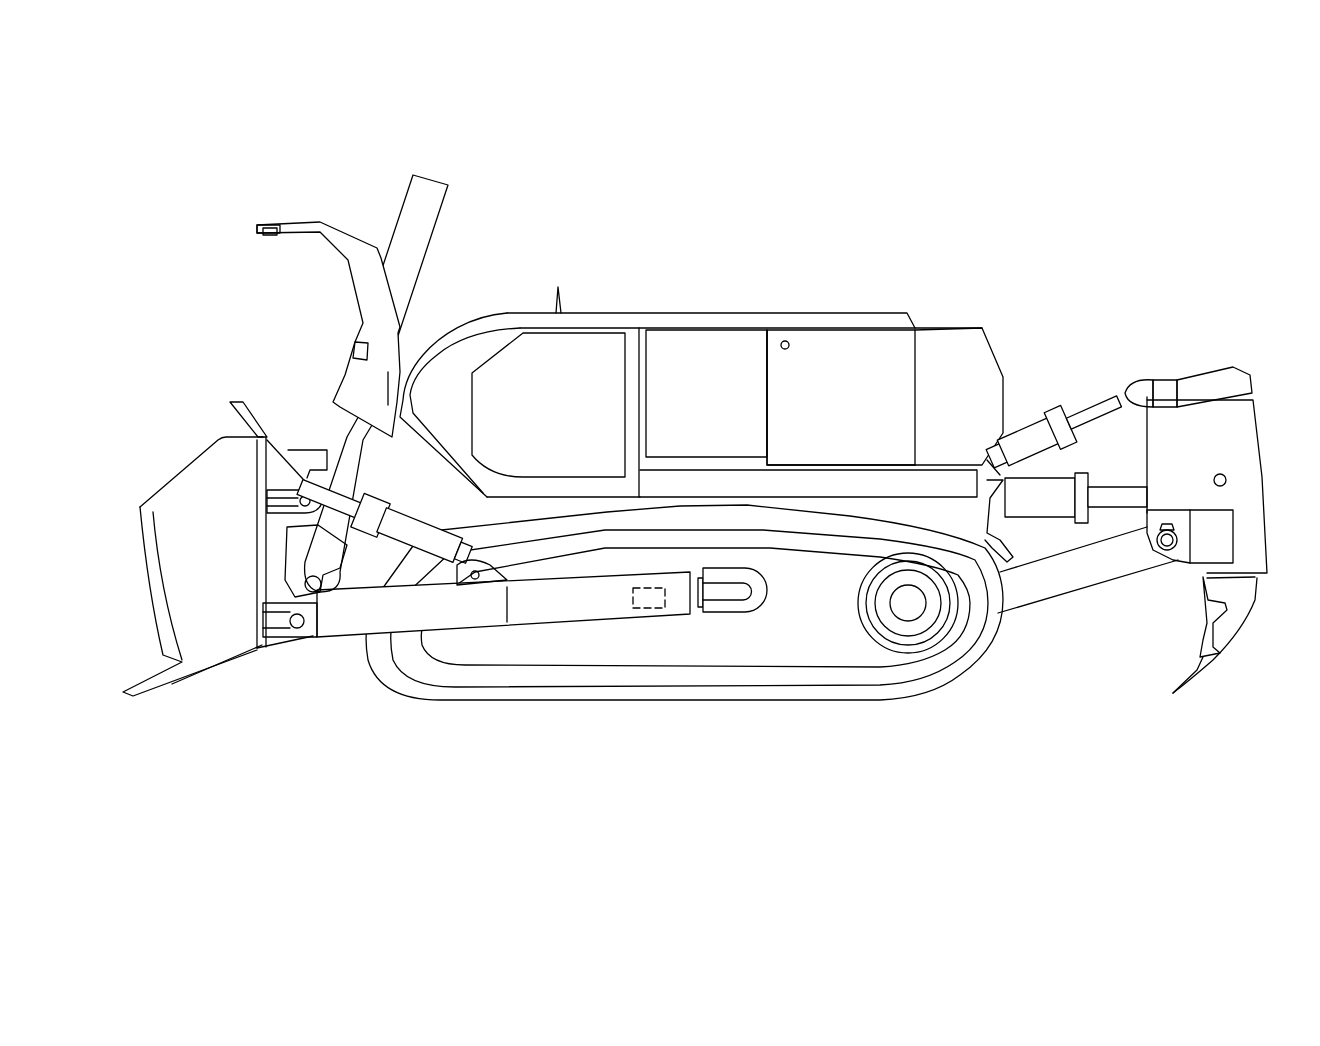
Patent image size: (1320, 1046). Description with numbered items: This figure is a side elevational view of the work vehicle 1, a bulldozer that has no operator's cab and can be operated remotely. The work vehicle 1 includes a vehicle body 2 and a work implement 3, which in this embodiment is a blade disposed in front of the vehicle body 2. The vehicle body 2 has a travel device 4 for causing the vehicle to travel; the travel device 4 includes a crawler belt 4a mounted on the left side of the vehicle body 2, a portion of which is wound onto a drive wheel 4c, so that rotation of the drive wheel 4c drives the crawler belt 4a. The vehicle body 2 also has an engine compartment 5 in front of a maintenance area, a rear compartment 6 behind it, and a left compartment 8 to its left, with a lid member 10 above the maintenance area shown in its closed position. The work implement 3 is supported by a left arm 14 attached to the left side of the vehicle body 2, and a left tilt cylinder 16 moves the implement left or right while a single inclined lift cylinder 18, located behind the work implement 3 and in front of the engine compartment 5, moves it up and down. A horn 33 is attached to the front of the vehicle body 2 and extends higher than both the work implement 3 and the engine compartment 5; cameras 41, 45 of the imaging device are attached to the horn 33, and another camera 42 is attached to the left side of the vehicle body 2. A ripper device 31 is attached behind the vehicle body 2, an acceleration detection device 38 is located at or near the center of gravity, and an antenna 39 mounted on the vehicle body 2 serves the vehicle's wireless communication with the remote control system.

The work vehicle 1 is at (290, 140).
The vehicle body 2 is at (692, 293).
The work implement 3 is at (153, 467).
The travel device 4 is at (790, 720).
The crawler belt 4a is at (698, 680).
The drive wheel 4c is at (913, 643).
The engine compartment 5 is at (580, 310).
The rear compartment 6 is at (965, 347).
The left compartment 8 is at (877, 330).
The lid member 10 is at (827, 313).
The left arm 14 is at (547, 605).
The left tilt cylinder 16 is at (408, 545).
The lift cylinder 18 is at (430, 178).
The ripper device 31 is at (1108, 385).
The horn 33 is at (327, 222).
The acceleration detection device 38 is at (648, 610).
The antenna 39 is at (560, 292).
The camera 41 is at (355, 347).
The camera 42 is at (788, 340).
The camera 45 is at (267, 237).